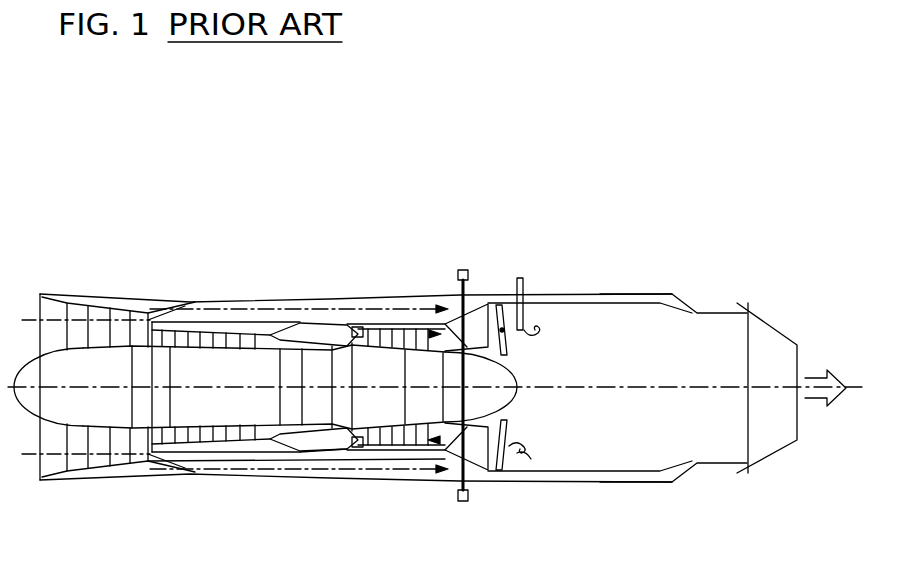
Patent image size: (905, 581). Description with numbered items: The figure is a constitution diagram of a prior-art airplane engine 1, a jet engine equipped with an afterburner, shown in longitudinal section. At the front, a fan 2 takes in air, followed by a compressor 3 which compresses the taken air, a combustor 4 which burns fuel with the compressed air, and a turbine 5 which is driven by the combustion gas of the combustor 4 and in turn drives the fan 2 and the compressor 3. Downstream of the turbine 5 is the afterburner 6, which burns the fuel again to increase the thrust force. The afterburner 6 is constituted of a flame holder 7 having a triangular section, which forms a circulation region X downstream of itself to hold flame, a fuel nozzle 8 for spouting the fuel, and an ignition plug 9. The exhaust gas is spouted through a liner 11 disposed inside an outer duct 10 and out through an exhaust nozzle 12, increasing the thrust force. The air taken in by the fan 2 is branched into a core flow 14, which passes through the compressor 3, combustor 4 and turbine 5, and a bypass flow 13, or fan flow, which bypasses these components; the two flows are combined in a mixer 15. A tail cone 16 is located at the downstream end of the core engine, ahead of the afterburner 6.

The airplane engine 1 is at (345, 212).
The fan 2 is at (100, 322).
The compressor 3 is at (207, 340).
The combustor 4 is at (313, 335).
The turbine 5 is at (392, 323).
The afterburner 6 is at (435, 209).
The flame holder 7 is at (499, 305).
The fuel nozzle 8 is at (463, 272).
The ignition plug 9 is at (522, 278).
The outer duct 10 is at (643, 293).
The liner 11 is at (623, 305).
The exhaust nozzle 12 is at (782, 330).
The bypass flow 13 is at (277, 461).
The core flow 14 is at (335, 447).
The mixer 15 is at (485, 460).
The tail cone 16 is at (507, 397).
The circulation region X is at (538, 462).